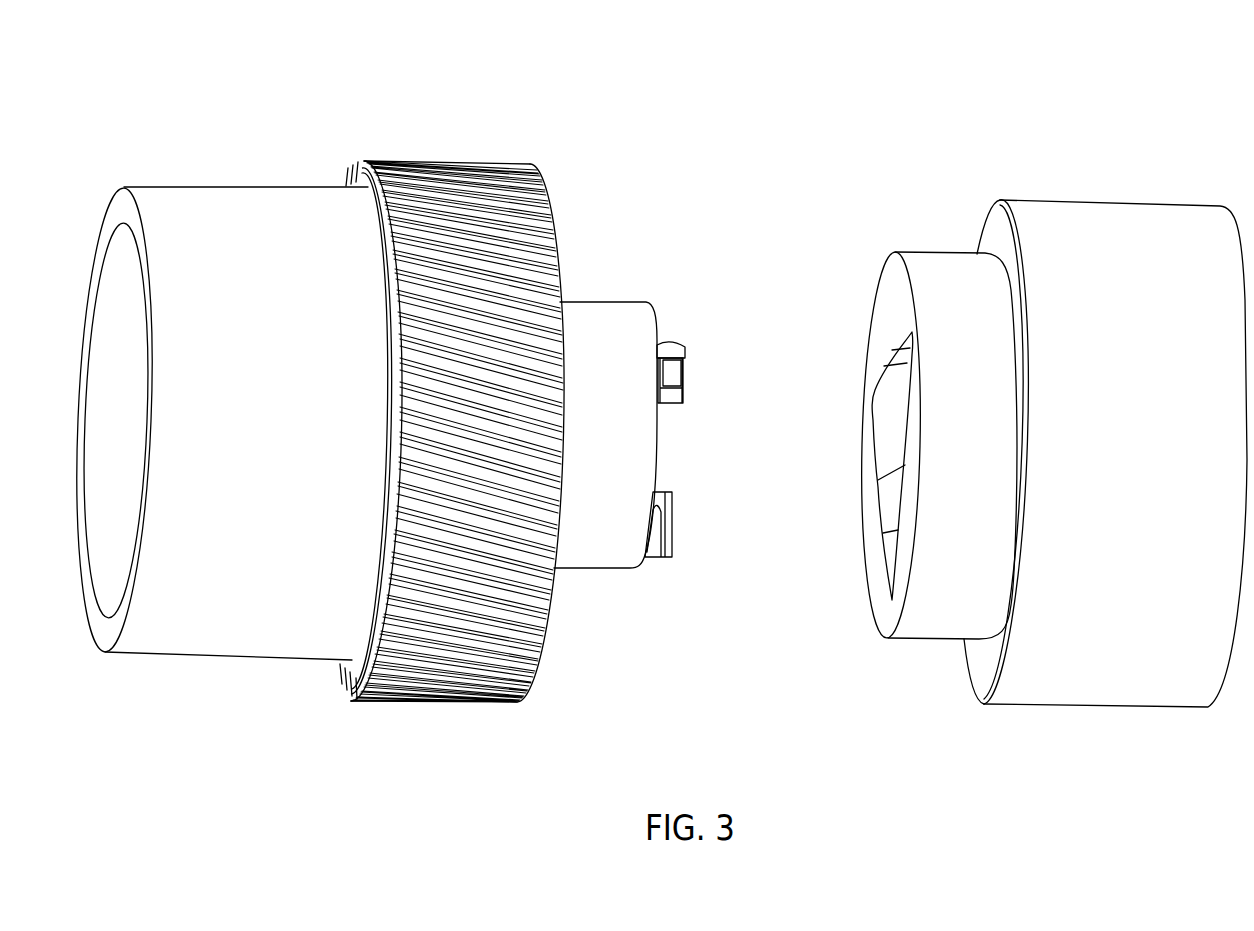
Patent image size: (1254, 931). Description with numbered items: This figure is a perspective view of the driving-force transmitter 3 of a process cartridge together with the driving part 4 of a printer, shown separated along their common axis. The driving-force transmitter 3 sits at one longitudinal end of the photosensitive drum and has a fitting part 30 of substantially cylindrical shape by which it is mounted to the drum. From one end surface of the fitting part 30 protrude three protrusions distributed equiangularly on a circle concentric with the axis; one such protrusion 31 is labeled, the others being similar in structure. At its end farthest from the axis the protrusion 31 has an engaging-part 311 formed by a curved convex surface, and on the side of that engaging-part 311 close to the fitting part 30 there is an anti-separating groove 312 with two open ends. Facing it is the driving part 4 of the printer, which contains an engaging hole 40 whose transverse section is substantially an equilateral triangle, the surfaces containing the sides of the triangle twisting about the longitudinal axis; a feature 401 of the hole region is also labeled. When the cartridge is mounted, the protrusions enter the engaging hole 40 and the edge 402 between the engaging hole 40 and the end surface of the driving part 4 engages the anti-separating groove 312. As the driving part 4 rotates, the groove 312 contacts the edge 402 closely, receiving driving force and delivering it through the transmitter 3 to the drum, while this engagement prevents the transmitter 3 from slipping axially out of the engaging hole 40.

The driving-force transmitter 3 is at (268, 131).
The fitting part 30 is at (598, 363).
The protrusion 31 is at (705, 362).
The engaging-part 311 is at (686, 348).
The anti-separating groove 312 is at (668, 342).
The driving part 4 is at (1103, 256).
The engaging hole 40 is at (894, 498).
The hole wall 401 is at (866, 432).
The edge 402 is at (883, 415).